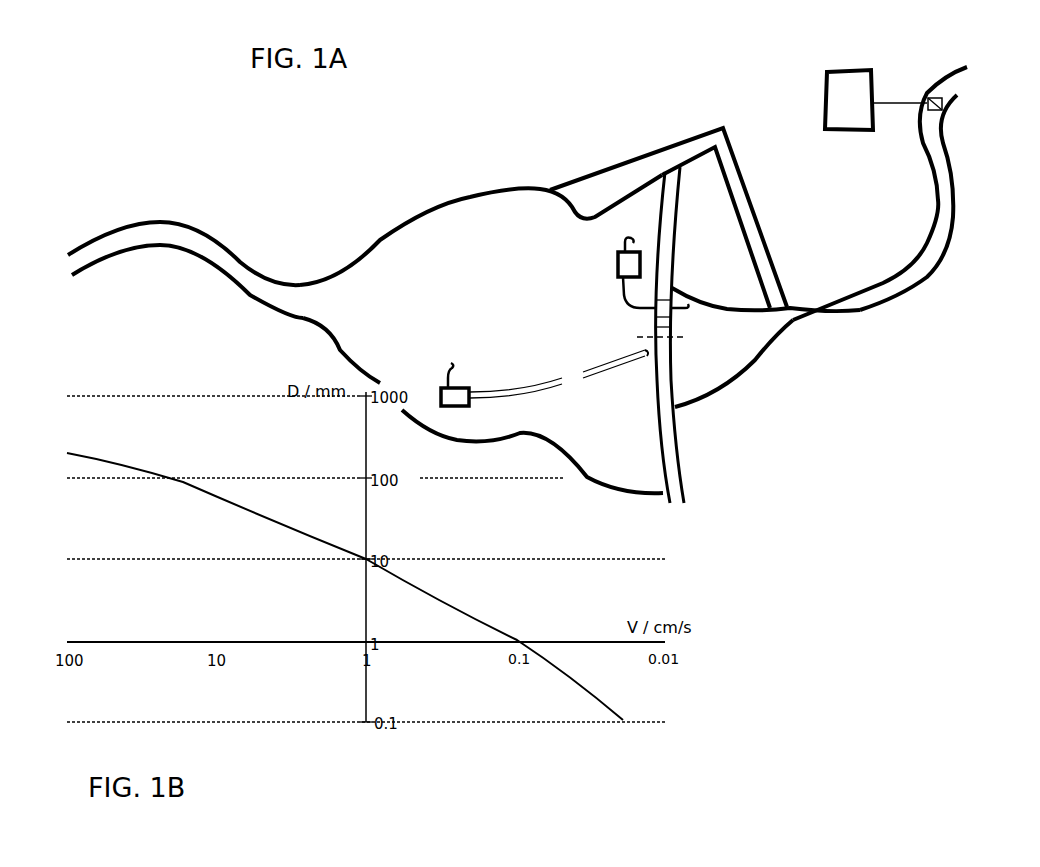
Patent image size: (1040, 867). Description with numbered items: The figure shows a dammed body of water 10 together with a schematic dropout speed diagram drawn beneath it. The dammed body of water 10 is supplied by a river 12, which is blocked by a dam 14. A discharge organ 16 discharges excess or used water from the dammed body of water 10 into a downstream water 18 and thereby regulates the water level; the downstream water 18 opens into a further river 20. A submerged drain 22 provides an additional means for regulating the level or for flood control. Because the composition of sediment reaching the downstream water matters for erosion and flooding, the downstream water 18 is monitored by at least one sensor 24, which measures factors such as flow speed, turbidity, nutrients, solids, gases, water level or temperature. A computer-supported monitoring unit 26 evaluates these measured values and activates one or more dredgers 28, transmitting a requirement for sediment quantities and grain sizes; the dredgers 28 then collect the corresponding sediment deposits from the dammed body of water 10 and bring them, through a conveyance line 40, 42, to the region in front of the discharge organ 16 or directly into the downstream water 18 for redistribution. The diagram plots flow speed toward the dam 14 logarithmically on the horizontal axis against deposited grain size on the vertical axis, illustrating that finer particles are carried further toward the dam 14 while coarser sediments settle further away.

The dammed body of water 10 is at (527, 220).
The river 12 is at (183, 238).
The dam 14 is at (672, 452).
The discharge organ 16 is at (670, 348).
The downstream water 18 is at (727, 345).
The river 20 is at (953, 150).
The submerged drain 22 is at (753, 207).
The sensor 24 is at (947, 108).
The monitoring unit 26 is at (843, 102).
The dredger 28 is at (620, 260).
The conveyance line 40 is at (450, 363).
The conveyance line 42 is at (562, 378).